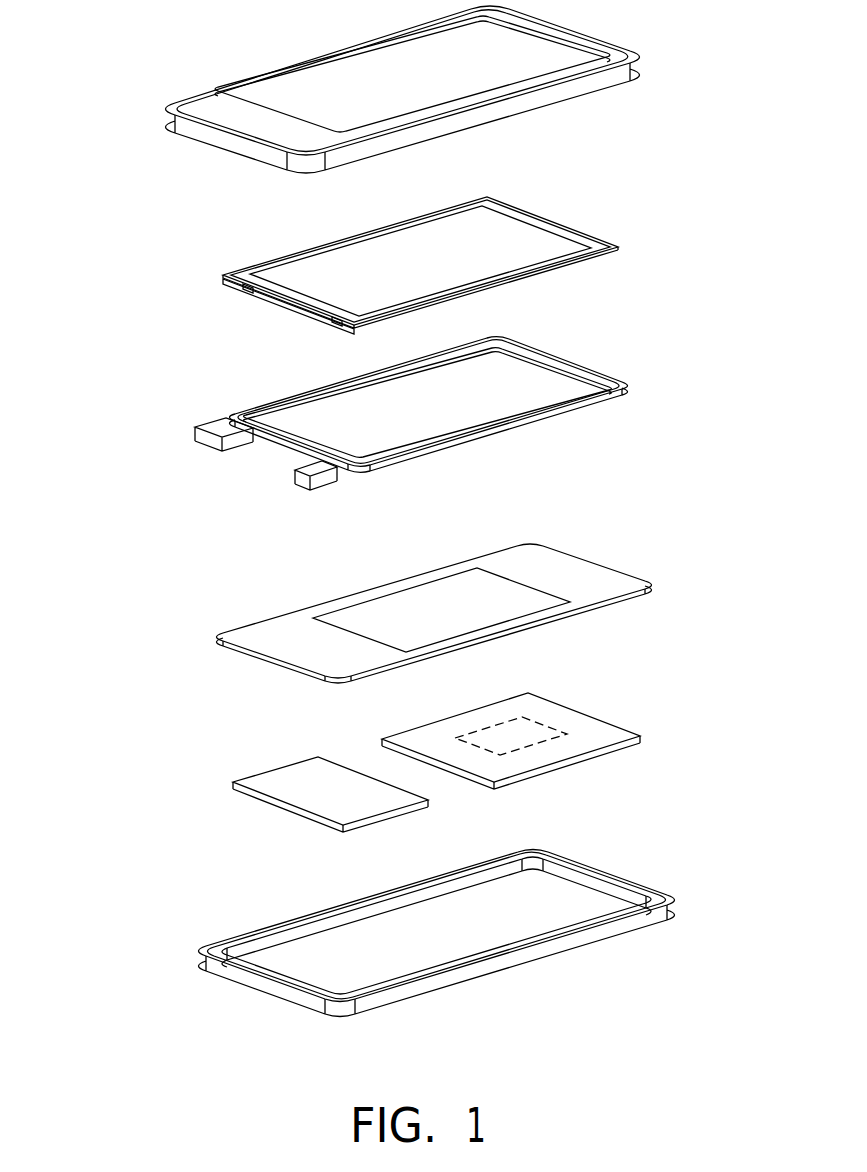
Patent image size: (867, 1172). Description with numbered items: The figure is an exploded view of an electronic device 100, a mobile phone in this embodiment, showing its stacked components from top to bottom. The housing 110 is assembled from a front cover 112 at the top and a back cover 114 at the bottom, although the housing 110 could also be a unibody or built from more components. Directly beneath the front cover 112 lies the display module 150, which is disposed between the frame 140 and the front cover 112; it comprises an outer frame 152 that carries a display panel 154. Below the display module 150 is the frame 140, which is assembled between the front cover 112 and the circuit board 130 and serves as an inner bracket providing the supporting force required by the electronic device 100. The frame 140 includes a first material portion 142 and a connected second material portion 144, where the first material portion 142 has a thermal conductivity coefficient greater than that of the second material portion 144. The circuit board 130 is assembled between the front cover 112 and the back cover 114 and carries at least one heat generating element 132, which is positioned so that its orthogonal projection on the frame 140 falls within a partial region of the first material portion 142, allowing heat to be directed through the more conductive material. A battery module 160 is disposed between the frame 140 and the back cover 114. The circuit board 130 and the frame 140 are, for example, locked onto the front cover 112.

The electronic device 100 is at (405, 547).
The housing 110 is at (346, 511).
The front cover 112 is at (197, 104).
The back cover 114 is at (385, 933).
The circuit board 130 is at (561, 713).
The heat generating element 132 is at (562, 727).
The frame 140 is at (505, 551).
The first material portion 142 is at (538, 603).
The second material portion 144 is at (560, 563).
The display module 150 is at (494, 342).
The outer frame 152 is at (587, 373).
The display panel 154 is at (618, 247).
The battery module 160 is at (293, 762).